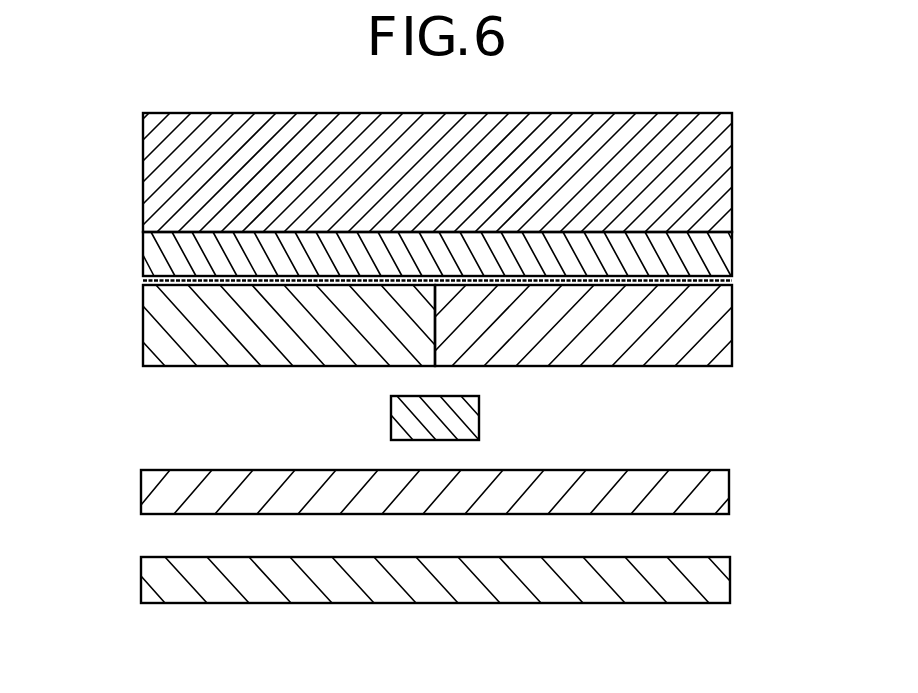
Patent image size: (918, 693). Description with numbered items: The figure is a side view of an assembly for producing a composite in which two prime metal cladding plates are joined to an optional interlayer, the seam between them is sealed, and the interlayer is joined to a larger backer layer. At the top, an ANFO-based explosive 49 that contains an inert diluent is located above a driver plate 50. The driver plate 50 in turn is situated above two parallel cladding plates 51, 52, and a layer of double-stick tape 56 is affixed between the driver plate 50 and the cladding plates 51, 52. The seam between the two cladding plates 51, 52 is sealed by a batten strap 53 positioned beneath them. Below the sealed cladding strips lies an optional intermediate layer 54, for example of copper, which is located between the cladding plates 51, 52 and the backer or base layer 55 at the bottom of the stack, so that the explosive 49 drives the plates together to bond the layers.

The ANFO-based explosive 49 is at (143, 155).
The driver plate 50 is at (733, 257).
The double-stick tape 56 is at (142, 280).
The cladding plate 51 is at (215, 367).
The cladding plate 52 is at (675, 367).
The batten strap 53 is at (480, 419).
The intermediate layer 54 is at (730, 492).
The backer layer 55 is at (141, 572).